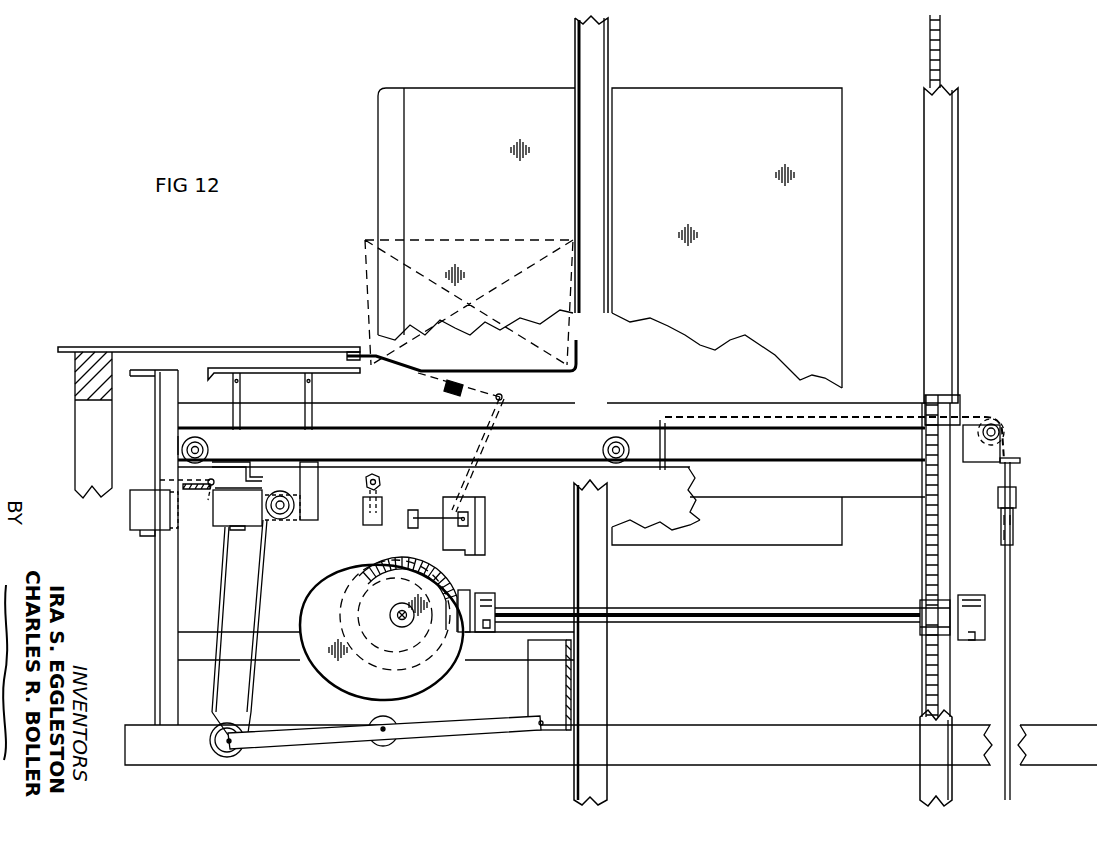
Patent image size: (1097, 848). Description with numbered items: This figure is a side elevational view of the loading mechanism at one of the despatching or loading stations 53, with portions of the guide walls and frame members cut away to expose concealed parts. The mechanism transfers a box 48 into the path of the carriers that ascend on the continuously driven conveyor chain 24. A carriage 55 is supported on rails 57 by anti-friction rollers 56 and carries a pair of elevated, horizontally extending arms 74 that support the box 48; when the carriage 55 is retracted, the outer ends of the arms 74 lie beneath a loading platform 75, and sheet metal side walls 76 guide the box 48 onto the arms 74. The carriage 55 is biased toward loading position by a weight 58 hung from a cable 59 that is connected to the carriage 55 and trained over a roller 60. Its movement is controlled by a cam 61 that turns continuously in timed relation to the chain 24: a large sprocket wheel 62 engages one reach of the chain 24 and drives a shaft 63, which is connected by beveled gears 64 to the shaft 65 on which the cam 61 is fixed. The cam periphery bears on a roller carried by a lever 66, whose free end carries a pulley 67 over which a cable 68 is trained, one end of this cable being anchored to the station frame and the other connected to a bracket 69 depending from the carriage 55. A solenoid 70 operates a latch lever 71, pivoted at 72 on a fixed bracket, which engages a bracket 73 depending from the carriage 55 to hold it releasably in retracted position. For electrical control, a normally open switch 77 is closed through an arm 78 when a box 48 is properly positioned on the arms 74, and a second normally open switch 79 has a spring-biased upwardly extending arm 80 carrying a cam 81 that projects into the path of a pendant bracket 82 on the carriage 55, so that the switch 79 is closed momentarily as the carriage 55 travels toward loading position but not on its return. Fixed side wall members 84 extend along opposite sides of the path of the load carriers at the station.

The conveyor chain 24 is at (928, 560).
The box 48 is at (365, 240).
The despatching or loading station 53 is at (348, 303).
The carriage 55 is at (522, 447).
The anti-friction roller 56 is at (208, 452).
The rail 57 is at (745, 466).
The weight 58 is at (1016, 497).
The cable 59 is at (960, 417).
The roller 60 is at (1003, 422).
The cam 61 is at (322, 592).
The large sprocket wheel 62 is at (938, 637).
The shaft 63 is at (680, 607).
The beveled gear 64 is at (455, 588).
The shaft 65 is at (390, 616).
The lever 66 is at (315, 735).
The pulley 67 is at (611, 745).
The cable 68 is at (218, 612).
The bracket 69 is at (308, 505).
The solenoid 70 is at (140, 517).
The latch lever 71 is at (240, 490).
The pivot 72 is at (207, 500).
The bracket 73 is at (248, 484).
The elevated arm 74 is at (565, 380).
The loading platform 75 is at (233, 347).
The sheet metal side wall 76 is at (425, 172).
The switch 77 is at (470, 541).
The arm 78 is at (405, 366).
The switch 79 is at (377, 522).
The arm 80 is at (392, 500).
The cam 81 is at (365, 482).
The pendant bracket 82 is at (340, 462).
The fixed side wall member 84 is at (830, 185).